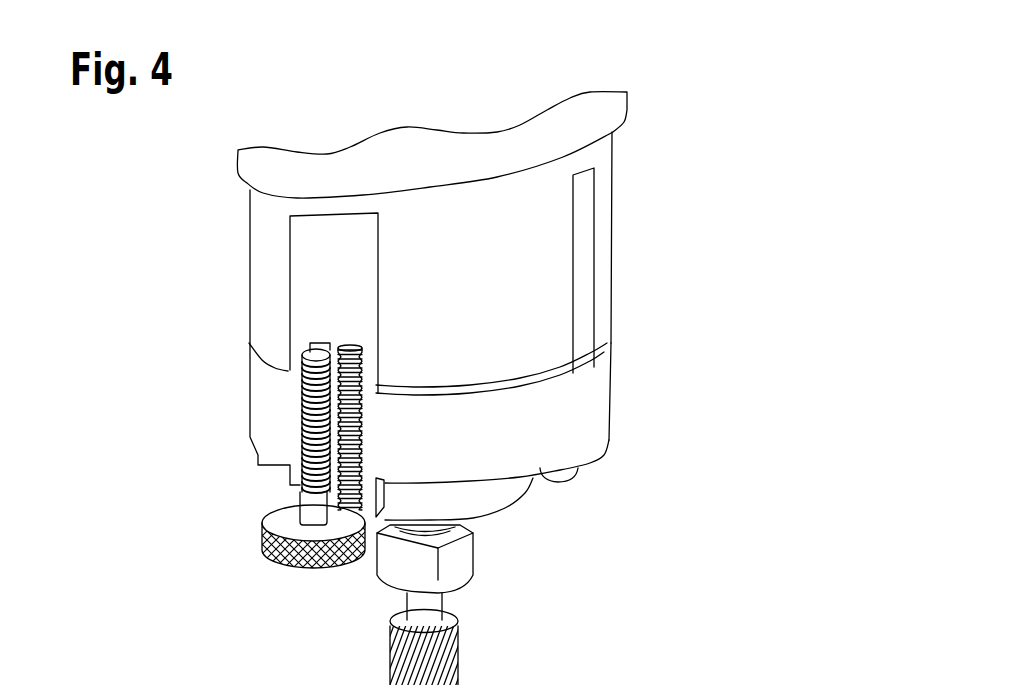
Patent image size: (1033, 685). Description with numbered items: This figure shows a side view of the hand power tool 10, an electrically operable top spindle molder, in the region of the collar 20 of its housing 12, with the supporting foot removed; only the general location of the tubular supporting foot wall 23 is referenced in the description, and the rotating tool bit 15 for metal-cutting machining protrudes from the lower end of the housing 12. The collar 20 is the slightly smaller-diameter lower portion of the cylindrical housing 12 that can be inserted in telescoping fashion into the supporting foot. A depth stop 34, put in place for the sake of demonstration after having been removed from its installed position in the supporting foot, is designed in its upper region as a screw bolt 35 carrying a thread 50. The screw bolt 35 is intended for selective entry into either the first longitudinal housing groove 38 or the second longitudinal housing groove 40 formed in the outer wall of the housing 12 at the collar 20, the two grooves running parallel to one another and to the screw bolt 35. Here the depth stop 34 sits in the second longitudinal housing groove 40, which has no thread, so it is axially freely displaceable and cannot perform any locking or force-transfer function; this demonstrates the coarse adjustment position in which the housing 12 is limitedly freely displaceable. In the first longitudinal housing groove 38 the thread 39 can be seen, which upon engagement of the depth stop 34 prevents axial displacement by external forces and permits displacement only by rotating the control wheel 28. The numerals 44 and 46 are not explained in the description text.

The hand power tool 10 is at (655, 70).
The housing 12 is at (550, 420).
The tool bit 15 is at (450, 618).
The collar 20 is at (503, 237).
The supporting foot wall 23 is at (560, 684).
The control wheel 28 is at (290, 565).
The depth stop 34 is at (300, 418).
The screw bolt 35 is at (307, 353).
The first longitudinal housing groove 38 is at (340, 500).
The thread 39 is at (350, 348).
The second longitudinal housing groove 40 is at (313, 343).
The cable sheath 44 is at (400, 655).
The foot 46 is at (610, 489).
The thread 50 is at (292, 379).